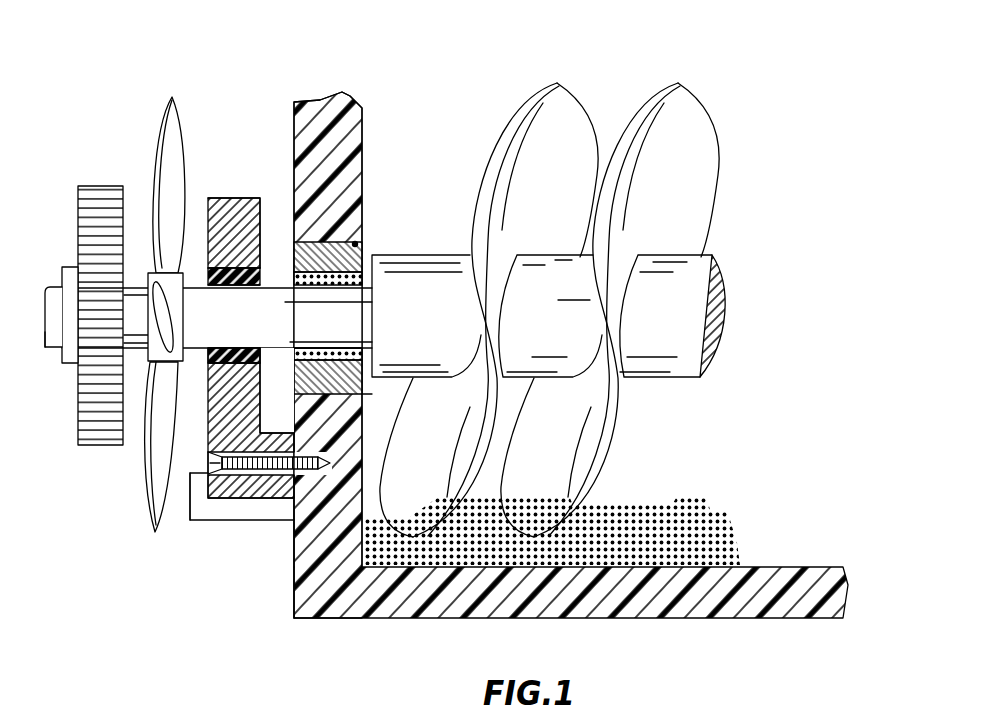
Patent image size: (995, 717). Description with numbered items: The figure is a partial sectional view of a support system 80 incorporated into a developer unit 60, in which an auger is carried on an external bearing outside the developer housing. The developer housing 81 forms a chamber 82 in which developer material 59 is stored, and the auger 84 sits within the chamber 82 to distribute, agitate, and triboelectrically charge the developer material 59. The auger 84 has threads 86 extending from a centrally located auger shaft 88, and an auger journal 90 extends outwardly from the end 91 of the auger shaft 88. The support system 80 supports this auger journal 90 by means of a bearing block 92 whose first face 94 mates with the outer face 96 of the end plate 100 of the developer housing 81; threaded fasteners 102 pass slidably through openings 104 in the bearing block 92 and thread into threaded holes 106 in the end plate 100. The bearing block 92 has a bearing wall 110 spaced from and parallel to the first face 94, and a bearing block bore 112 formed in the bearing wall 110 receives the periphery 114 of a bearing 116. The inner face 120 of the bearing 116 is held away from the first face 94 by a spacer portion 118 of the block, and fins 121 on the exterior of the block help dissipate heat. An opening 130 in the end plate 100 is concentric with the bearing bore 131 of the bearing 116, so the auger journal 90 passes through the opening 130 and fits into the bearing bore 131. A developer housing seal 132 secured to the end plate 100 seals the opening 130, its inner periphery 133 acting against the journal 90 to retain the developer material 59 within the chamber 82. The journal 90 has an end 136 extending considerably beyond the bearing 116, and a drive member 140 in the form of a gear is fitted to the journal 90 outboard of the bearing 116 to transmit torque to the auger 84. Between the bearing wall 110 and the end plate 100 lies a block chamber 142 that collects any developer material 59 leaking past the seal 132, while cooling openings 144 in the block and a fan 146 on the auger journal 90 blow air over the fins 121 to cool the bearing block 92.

The support system 80 is at (137, 70).
The developer housing 81 is at (358, 115).
The chamber 82 is at (579, 496).
The auger 84 is at (605, 300).
The threads 86 is at (517, 107).
The auger shaft 88 is at (724, 282).
The developer material 59 is at (738, 518).
The developer unit 60 is at (230, 600).
The auger journal 90 is at (337, 302).
The end of the auger shaft 91 is at (371, 370).
The bearing block 92 is at (178, 537).
The first face 94 is at (295, 513).
The outer face 96 is at (292, 613).
The end plate 100 is at (358, 142).
The threaded fasteners 102 is at (207, 460).
The openings 104 is at (232, 468).
The threaded holes 106 is at (333, 466).
The bearing wall 110 is at (236, 228).
The bearing block bore 112 is at (209, 285).
The periphery 114 is at (230, 200).
The bearing 116 is at (210, 360).
The spacer portion 118 is at (267, 488).
The inner face 120 is at (262, 358).
The fins 121 is at (207, 513).
The opening 130 is at (373, 357).
The bearing bore 131 is at (220, 352).
The developer housing seal 132 is at (358, 242).
The inner periphery 133 is at (347, 357).
The end 136 is at (46, 335).
The drive member 140 is at (85, 188).
The block chamber 142 is at (277, 398).
The cooling openings 144 is at (273, 237).
The fan 146 is at (170, 142).